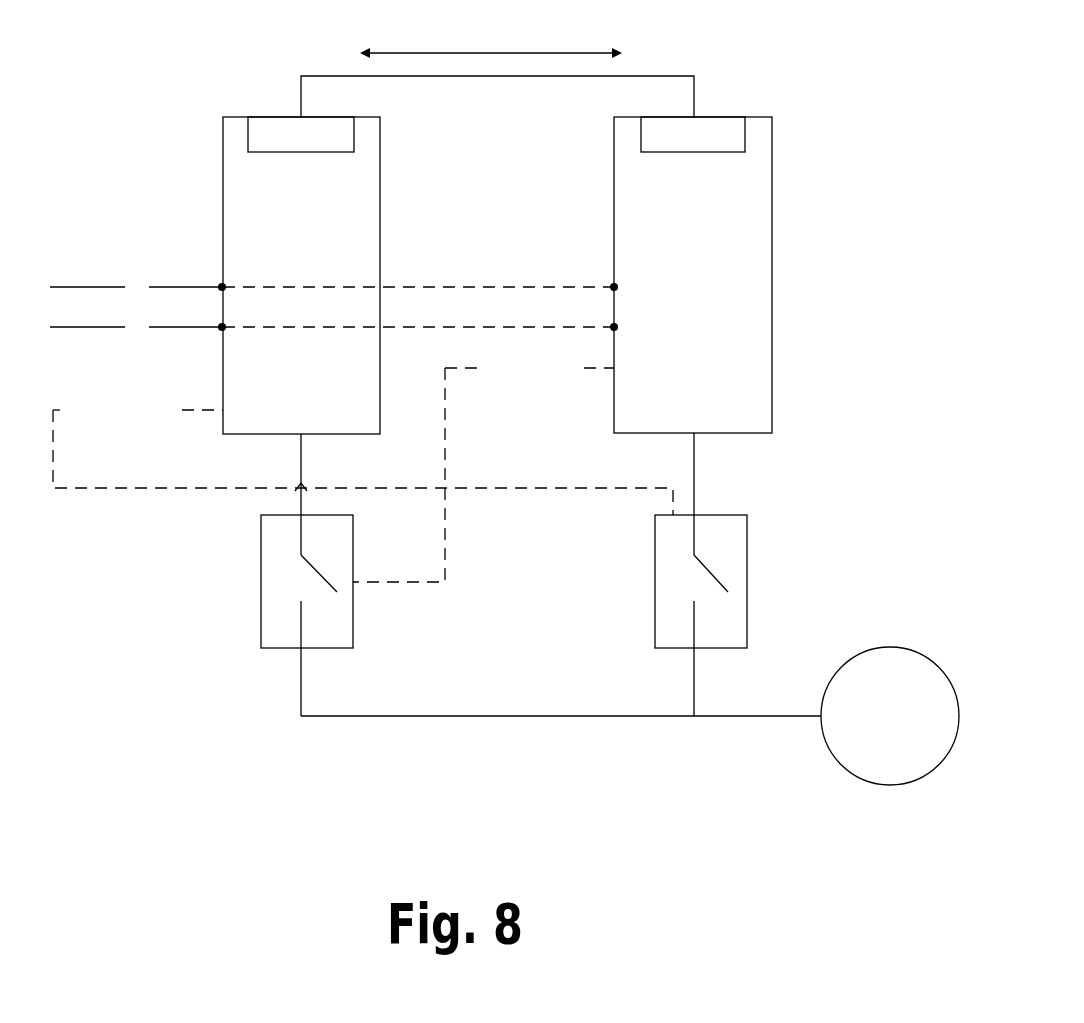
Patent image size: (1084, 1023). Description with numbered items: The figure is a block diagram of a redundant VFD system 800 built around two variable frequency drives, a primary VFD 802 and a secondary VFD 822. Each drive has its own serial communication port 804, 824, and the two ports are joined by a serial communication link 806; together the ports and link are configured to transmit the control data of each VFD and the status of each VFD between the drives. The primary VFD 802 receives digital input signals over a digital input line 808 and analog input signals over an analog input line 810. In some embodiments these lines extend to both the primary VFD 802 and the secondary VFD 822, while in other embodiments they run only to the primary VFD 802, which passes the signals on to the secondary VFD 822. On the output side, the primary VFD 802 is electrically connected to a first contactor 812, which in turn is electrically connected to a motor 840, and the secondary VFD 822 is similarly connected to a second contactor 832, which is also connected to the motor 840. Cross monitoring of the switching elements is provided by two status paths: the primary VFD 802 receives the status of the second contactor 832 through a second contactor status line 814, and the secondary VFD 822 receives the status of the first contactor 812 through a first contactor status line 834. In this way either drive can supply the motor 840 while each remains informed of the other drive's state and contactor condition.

The redundant VFD system 800 is at (210, 756).
The primary VFD 802 is at (380, 219).
The serial communication port 804 is at (354, 131).
The serial communication link 806 is at (677, 76).
The digital input line 808 is at (88, 287).
The analog input line 810 is at (118, 328).
The first contactor 812 is at (353, 637).
The second contactor status line 814 is at (168, 488).
The secondary VFD 822 is at (772, 236).
The serial communication port 824 is at (745, 131).
The second contactor 832 is at (747, 536).
The first contactor status line 834 is at (445, 547).
The motor 840 is at (890, 647).